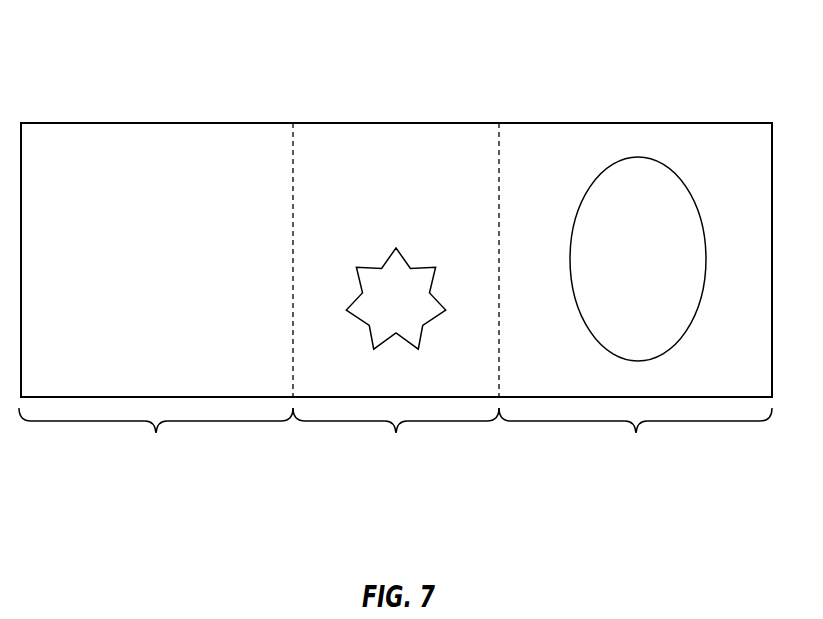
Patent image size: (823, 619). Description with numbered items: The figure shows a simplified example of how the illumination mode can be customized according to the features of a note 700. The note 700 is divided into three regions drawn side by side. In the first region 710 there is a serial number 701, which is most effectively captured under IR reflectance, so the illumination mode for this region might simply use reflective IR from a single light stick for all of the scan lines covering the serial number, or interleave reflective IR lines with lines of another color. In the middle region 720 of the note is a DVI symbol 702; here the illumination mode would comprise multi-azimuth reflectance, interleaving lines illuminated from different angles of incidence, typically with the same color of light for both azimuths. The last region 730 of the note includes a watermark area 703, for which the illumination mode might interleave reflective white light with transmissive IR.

The note 700 is at (179, 79).
The serial number 701 is at (162, 318).
The DVI symbol 702 is at (400, 238).
The watermark area 703 is at (645, 150).
The first region 710 is at (156, 471).
The middle region 720 is at (396, 472).
The last region 730 is at (635, 478).